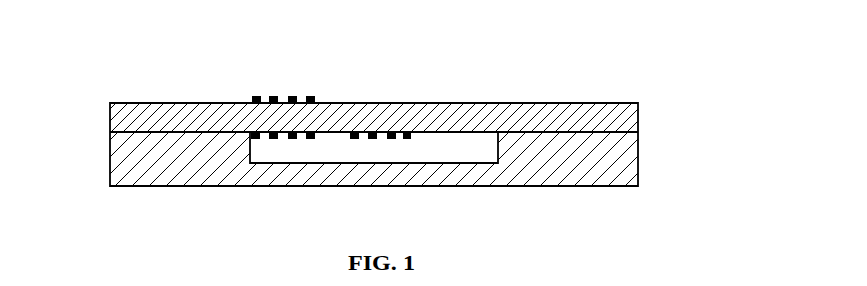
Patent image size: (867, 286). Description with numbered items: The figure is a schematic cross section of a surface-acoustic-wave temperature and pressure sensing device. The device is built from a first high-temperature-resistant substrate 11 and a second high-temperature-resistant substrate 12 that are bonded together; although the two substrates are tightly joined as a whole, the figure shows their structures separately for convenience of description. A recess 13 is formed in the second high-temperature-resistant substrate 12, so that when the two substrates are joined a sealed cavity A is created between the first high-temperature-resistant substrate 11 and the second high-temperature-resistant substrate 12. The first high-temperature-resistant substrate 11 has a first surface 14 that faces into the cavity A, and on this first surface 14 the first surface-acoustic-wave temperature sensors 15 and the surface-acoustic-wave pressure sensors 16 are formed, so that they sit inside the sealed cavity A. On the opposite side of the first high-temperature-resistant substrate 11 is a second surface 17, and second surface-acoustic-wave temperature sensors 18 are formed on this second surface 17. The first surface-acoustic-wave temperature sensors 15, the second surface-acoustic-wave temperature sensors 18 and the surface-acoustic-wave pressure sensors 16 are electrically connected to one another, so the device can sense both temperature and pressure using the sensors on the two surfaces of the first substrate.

The first high-temperature-resistant substrate 11 is at (145, 127).
The second high-temperature-resistant substrate 12 is at (607, 158).
The recess 13 is at (487, 165).
The first surface 14 is at (325, 131).
The first surface-acoustic-wave temperature sensors 15 is at (250, 130).
The surface-acoustic-wave pressure sensors 16 is at (408, 131).
The second surface 17 is at (422, 103).
The second surface-acoustic-wave temperature sensors 18 is at (252, 100).
The cavity A is at (468, 143).